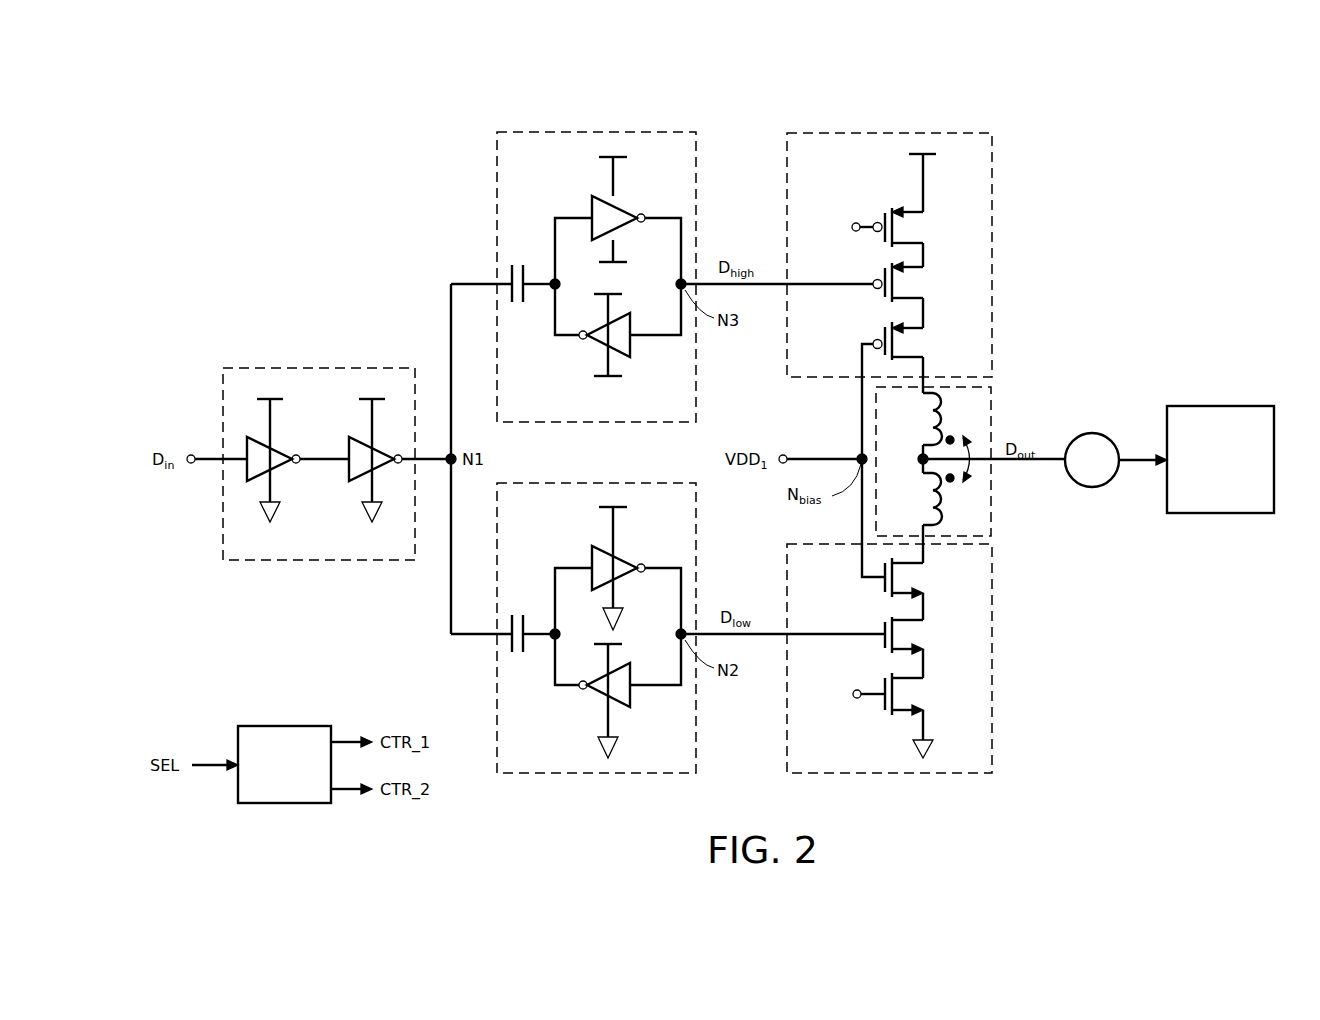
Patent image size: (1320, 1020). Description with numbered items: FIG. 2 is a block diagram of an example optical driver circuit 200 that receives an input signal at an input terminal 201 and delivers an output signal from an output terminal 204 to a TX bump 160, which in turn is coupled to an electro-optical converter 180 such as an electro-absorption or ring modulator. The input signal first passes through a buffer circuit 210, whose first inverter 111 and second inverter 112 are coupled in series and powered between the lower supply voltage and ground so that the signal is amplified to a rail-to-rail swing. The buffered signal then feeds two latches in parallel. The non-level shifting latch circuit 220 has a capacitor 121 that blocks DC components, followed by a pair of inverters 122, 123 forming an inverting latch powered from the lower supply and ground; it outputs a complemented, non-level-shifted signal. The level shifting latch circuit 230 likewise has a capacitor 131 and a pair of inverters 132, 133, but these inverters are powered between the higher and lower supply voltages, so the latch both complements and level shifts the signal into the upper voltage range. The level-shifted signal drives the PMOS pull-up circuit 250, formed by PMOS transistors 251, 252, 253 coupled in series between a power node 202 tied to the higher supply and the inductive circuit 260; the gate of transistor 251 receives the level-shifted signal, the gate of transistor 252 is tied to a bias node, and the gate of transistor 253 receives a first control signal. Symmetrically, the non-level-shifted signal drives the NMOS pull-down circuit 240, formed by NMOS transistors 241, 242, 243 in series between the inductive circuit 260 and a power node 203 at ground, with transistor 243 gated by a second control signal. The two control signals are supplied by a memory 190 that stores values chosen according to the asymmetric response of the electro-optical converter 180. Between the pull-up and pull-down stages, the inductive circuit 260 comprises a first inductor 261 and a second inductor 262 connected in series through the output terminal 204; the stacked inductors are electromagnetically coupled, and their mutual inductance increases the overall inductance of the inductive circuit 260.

The optical driver circuit 200 is at (279, 126).
The input terminal 201 is at (192, 466).
The power node 202 is at (926, 200).
The power node 203 is at (926, 720).
The output terminal 204 is at (918, 460).
The buffer circuit 210 is at (285, 368).
The first inverter 111 is at (279, 456).
The second inverter 112 is at (349, 470).
The non-level shifting latch circuit 220 is at (497, 694).
The capacitor 121 is at (520, 612).
The inverter 122 is at (626, 561).
The inverter 123 is at (631, 695).
The level shifting latch circuit 230 is at (497, 176).
The capacitor 131 is at (520, 262).
The inverter 132 is at (626, 211).
The inverter 133 is at (631, 345).
The NMOS pull-down circuit 240 is at (993, 628).
The NMOS transistor 241 is at (881, 638).
The NMOS transistor 242 is at (883, 585).
The NMOS transistor 243 is at (881, 702).
The PMOS pull-up circuit 250 is at (993, 232).
The PMOS transistor 251 is at (874, 288).
The PMOS transistor 252 is at (880, 331).
The PMOS transistor 253 is at (880, 219).
The inductive circuit 260 is at (876, 418).
The first inductor 261 is at (930, 401).
The second inductor 262 is at (930, 515).
The TX bump 160 is at (1091, 432).
The electro-optical converter 180 is at (1220, 459).
The memory 190 is at (284, 764).